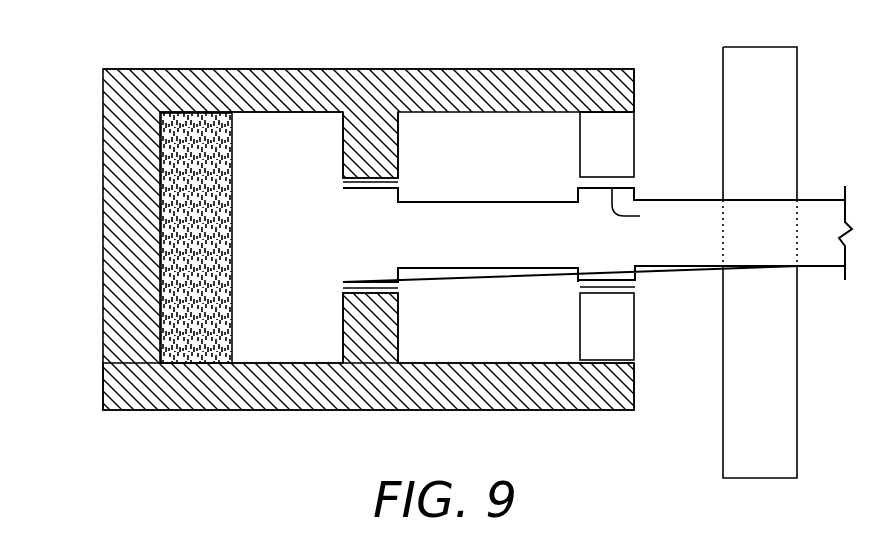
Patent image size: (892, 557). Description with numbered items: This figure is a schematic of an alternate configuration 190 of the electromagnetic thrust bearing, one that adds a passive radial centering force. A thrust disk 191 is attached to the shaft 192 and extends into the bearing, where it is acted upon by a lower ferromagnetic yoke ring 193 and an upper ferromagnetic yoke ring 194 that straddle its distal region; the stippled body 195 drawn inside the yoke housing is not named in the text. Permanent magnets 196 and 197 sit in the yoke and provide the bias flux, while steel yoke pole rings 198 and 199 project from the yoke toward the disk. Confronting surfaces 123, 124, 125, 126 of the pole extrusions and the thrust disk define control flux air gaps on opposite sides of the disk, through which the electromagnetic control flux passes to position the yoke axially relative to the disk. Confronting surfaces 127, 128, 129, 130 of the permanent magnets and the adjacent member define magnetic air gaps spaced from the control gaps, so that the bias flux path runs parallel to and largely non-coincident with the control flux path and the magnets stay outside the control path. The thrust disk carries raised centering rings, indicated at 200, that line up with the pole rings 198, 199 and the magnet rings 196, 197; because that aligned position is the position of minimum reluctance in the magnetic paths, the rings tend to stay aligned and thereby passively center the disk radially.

The configuration 190 is at (127, 36).
The thrust disk 191 is at (802, 200).
The shaft 192 is at (798, 360).
The lower ferromagnetic yoke ring 193 is at (252, 410).
The upper ferromagnetic yoke ring 194 is at (252, 68).
The piston 195 is at (232, 227).
The permanent magnet 196 is at (635, 142).
The permanent magnet 197 is at (636, 328).
The steel yoke pole ring 198 is at (343, 165).
The steel yoke pole ring 199 is at (343, 330).
The confronting surface 123 is at (343, 181).
The confronting surface 124 is at (347, 188).
The confronting surface 125 is at (343, 289).
The confronting surface 126 is at (396, 286).
The confronting surface 127 is at (636, 179).
The confronting surface 128 is at (640, 215).
The confronting surface 129 is at (636, 287).
The confronting surface 130 is at (578, 280).
The recesses 200 is at (400, 199).